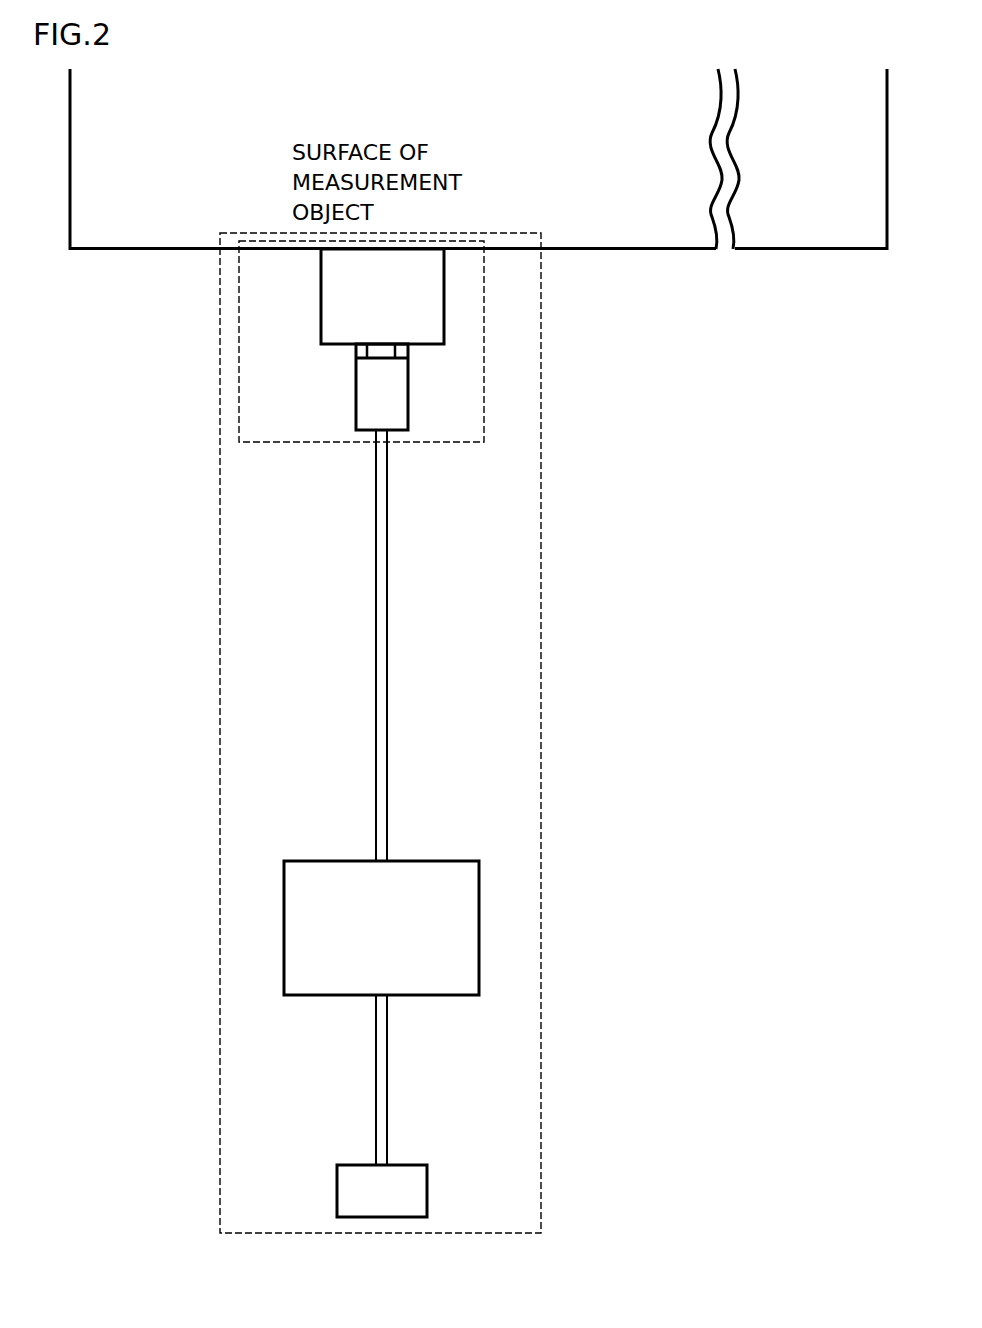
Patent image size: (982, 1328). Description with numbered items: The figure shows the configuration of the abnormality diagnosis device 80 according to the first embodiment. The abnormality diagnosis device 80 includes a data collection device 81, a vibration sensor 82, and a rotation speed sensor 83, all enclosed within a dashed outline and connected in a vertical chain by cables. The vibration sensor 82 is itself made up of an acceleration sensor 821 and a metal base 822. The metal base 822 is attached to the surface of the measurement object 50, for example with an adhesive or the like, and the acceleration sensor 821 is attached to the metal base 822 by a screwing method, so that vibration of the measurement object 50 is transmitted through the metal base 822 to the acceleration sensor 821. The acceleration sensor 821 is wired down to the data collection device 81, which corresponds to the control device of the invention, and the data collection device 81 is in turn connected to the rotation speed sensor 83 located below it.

The measurement object 50 is at (153, 251).
The abnormality diagnosis device 80 is at (542, 446).
The vibration sensor 82 is at (484, 343).
The metal base 822 is at (320, 298).
The acceleration sensor 821 is at (409, 393).
The data collection device 81 is at (283, 930).
The rotation speed sensor 83 is at (428, 1190).